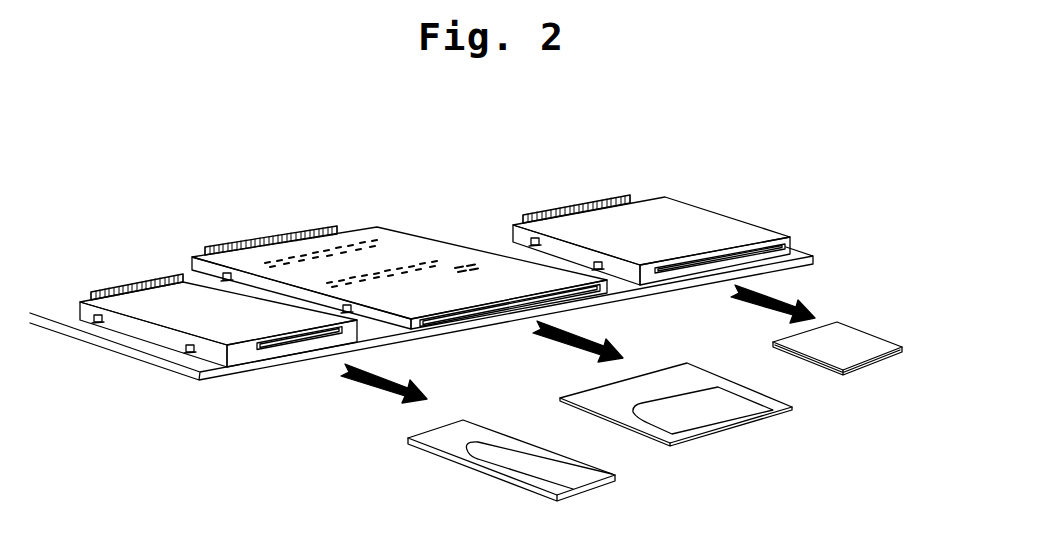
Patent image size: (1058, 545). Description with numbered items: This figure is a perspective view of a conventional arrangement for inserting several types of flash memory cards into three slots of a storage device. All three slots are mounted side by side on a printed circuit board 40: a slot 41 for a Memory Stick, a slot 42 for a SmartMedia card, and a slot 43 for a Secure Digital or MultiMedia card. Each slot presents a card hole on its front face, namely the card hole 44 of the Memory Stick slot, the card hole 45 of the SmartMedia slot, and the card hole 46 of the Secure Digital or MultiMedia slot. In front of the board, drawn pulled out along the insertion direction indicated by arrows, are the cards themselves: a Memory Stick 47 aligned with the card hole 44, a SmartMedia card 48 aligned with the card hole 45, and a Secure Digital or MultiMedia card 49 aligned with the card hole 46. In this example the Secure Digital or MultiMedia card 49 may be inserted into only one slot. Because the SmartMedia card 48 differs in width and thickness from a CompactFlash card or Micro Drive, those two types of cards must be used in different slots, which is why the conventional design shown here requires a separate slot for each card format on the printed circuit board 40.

The printed circuit board 40 is at (140, 351).
The slot for Memory Stick 41 is at (140, 300).
The slot for SmartMedia card 42 is at (350, 240).
The slot for Secure Digital or MultiMedia card 43 is at (633, 220).
The card hole 44 is at (273, 347).
The card hole 45 is at (450, 315).
The card hole 46 is at (673, 267).
The Memory Stick 47 is at (543, 472).
The SmartMedia card 48 is at (710, 405).
The Secure Digital or MultiMedia card 49 is at (835, 348).